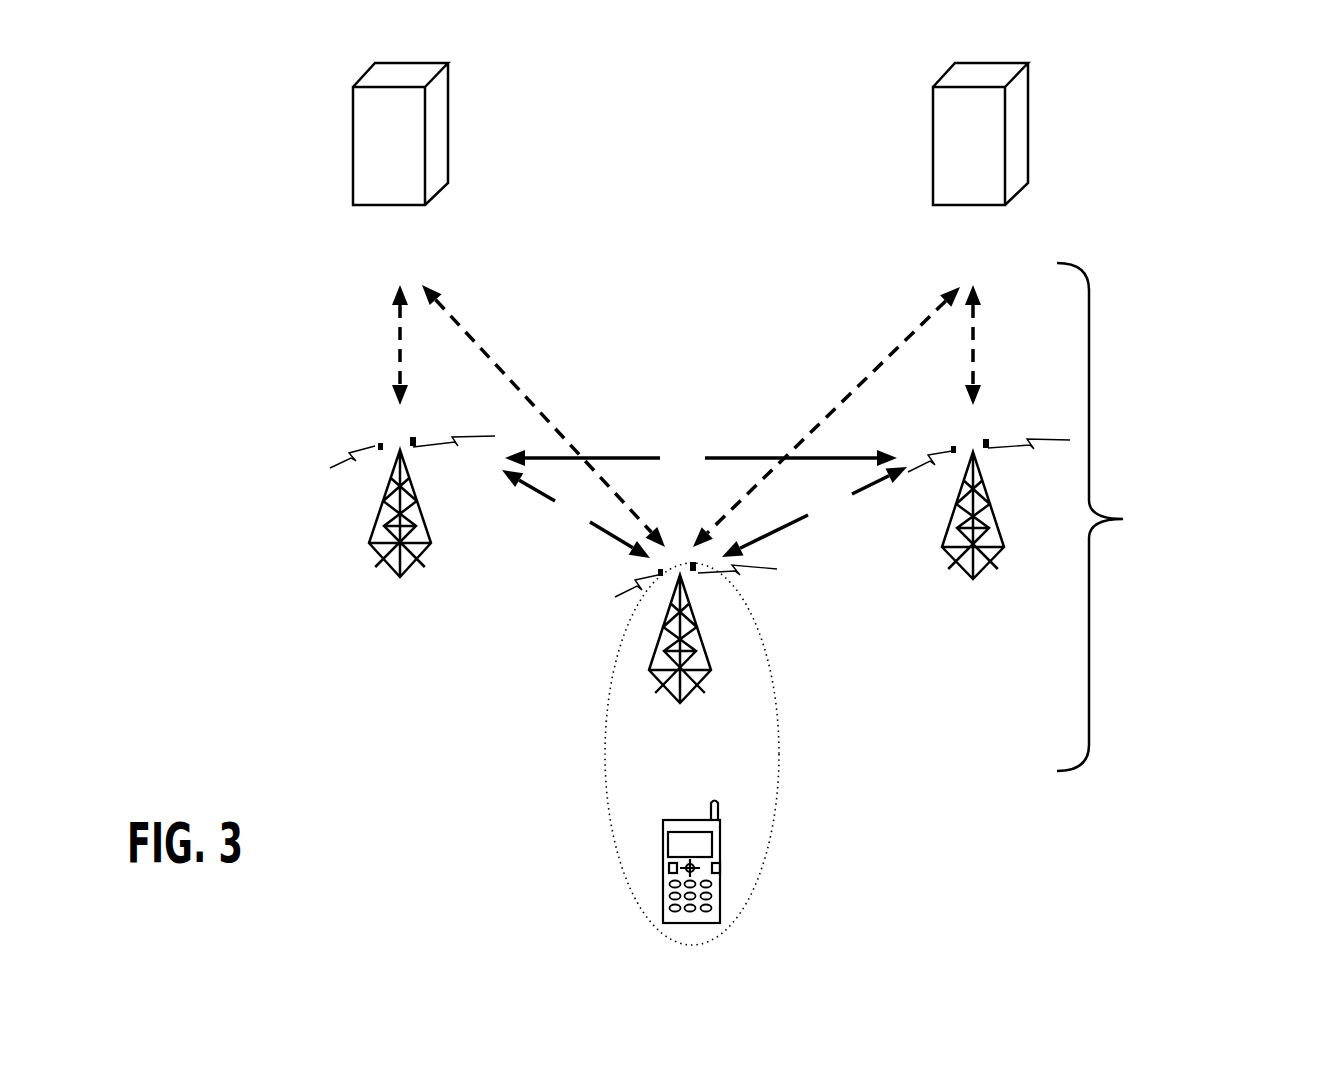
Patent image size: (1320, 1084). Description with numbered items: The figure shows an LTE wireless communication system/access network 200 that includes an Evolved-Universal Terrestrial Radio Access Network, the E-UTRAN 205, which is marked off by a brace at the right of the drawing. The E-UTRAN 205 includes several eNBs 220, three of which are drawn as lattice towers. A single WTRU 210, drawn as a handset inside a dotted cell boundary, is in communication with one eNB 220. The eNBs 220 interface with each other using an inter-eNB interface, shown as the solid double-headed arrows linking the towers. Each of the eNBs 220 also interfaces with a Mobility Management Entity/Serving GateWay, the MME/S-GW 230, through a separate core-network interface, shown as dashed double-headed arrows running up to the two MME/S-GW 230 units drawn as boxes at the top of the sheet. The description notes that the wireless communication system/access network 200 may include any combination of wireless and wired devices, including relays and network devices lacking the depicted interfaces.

The LTE wireless communication system/access network 200 is at (1243, 102).
The Evolved-Universal Terrestrial Radio Access Network (E-UTRAN) 205 is at (1165, 517).
The WTRU 210 is at (728, 842).
The eNB 220 is at (812, 670).
The Mobility Management Entity (MME)/Serving GateWay (S-GW) 230 is at (448, 112).